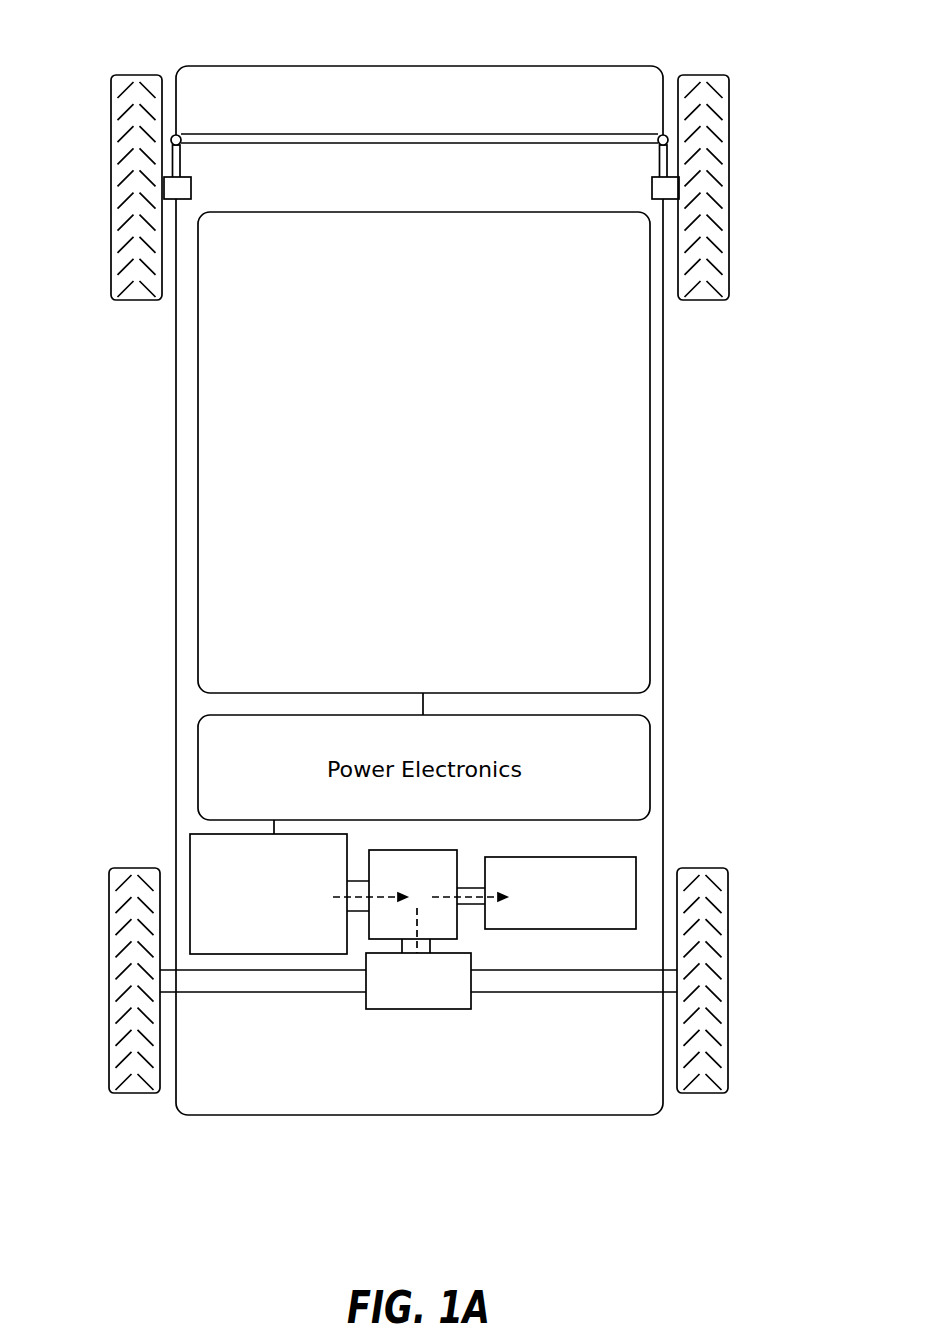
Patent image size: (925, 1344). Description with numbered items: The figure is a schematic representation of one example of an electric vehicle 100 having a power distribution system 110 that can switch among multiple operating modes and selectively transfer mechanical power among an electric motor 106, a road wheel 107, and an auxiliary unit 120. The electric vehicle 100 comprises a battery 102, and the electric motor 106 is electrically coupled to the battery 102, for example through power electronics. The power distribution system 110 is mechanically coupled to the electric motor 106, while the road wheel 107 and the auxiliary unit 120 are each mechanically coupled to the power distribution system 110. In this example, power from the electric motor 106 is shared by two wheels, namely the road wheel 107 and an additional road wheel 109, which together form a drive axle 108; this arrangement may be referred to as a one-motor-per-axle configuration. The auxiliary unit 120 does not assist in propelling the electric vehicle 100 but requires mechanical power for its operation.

The electric vehicle 100 is at (70, 52).
The battery 102 is at (487, 465).
The electric motor 106 is at (327, 923).
The road wheel 107 is at (112, 870).
The drive axle 108 is at (418, 992).
The additional road wheel 109 is at (720, 908).
The power distribution system 110 is at (445, 917).
The auxiliary unit 120 is at (580, 925).